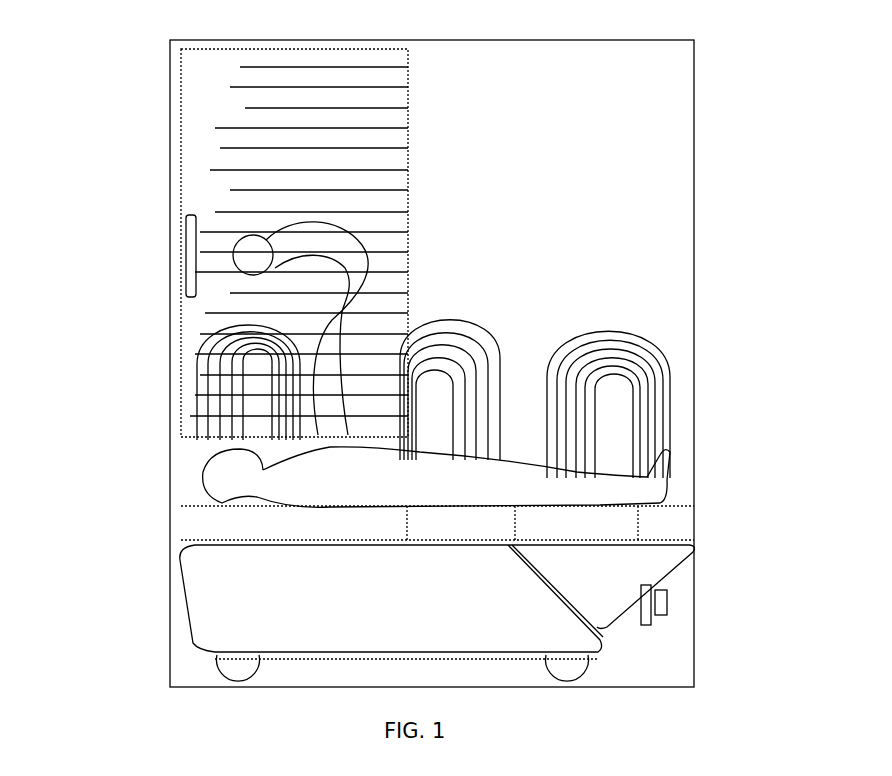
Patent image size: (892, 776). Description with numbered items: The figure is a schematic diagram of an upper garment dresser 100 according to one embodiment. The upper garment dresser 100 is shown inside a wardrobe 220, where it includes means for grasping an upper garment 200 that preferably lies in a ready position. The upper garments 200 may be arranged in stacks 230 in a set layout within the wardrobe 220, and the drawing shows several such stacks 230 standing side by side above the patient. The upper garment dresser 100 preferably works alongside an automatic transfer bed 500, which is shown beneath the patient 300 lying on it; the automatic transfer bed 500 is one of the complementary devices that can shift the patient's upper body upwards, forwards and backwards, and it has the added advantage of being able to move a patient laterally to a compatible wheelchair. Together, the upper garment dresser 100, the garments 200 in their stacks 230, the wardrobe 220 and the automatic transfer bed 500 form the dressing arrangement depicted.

The upper garment dresser 100 is at (305, 228).
The upper garment 200 is at (197, 383).
The wardrobe 220 is at (613, 210).
The stacks 230 is at (683, 423).
The patient 300 is at (517, 474).
The automatic transfer bed 500 is at (317, 600).